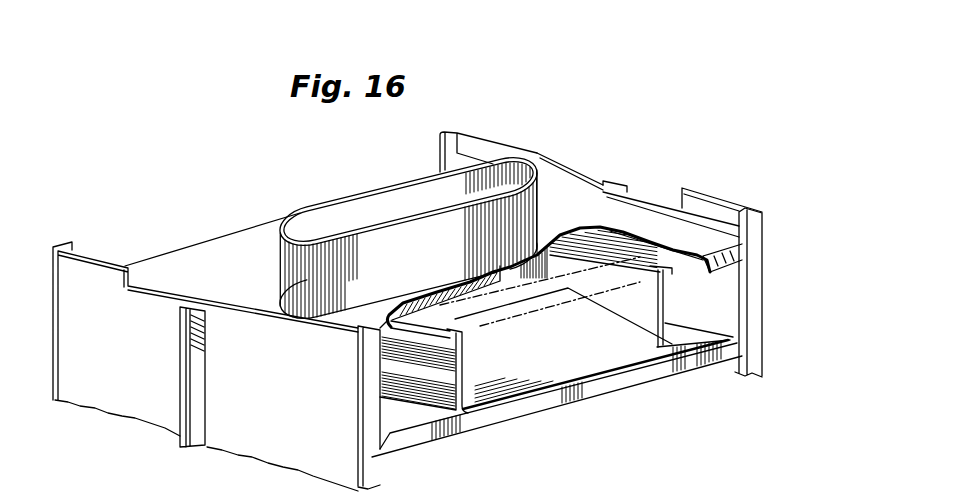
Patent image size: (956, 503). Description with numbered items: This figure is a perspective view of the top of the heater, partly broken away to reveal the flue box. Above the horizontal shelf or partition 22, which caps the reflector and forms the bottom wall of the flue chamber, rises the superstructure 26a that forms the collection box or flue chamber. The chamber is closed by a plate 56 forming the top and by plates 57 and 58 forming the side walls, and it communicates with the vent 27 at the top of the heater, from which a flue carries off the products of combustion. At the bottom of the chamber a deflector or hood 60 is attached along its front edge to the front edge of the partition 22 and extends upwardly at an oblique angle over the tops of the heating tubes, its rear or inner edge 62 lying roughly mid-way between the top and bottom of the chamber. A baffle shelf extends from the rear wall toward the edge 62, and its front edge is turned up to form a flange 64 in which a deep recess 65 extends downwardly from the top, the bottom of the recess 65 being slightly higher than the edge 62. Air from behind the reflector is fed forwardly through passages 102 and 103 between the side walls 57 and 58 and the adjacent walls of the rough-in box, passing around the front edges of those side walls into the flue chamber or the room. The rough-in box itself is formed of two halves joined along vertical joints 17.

The superstructure 26a is at (196, 231).
The vertical joints 17 is at (183, 438).
The vent 27 is at (387, 185).
The plate 56 is at (560, 202).
The deep recess 65 is at (490, 272).
The flange 64 is at (540, 268).
The rear or inner edge 62 is at (474, 310).
The plate 58 is at (458, 357).
The plate 57 is at (658, 312).
The horizontal shelf or partition 22 is at (680, 334).
The deflector or hood 60 is at (592, 350).
The passage 103 is at (395, 410).
The passage 102 is at (718, 303).